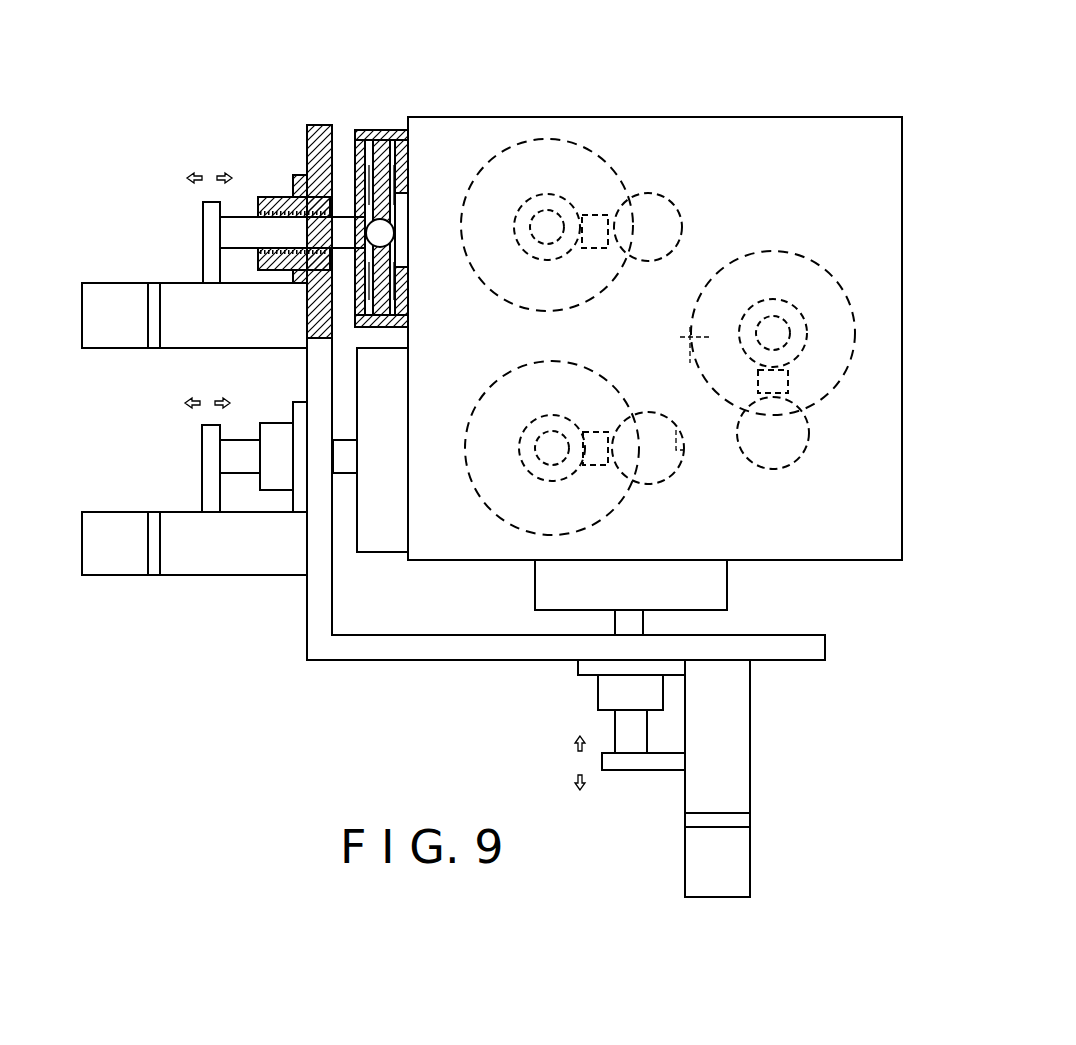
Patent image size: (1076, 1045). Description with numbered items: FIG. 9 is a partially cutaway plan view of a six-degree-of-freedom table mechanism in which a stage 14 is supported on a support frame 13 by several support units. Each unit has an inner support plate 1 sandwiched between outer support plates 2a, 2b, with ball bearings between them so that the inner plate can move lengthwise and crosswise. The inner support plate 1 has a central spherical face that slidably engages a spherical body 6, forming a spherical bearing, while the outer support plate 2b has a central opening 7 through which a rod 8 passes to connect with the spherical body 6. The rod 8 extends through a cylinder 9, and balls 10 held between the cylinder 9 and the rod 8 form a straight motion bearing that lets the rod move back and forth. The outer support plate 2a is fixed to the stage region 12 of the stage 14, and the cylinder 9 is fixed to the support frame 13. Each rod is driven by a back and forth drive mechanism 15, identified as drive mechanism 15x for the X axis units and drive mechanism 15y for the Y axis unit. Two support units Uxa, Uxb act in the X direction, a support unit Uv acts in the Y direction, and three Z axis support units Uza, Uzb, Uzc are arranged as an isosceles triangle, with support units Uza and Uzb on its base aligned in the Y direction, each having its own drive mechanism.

The inner support plate 1 is at (371, 128).
The outer support plate 2a is at (402, 128).
The outer support plate 2b is at (347, 150).
The spherical body 6 is at (386, 233).
The opening 7 is at (353, 262).
The rod 8 is at (240, 230).
The cylinder 9 is at (608, 688).
The balls 10 is at (45, 445).
The stage region 12 is at (407, 150).
The support frame 13 is at (345, 655).
The stage 14 is at (803, 125).
The back and forth drive mechanism 15 is at (669, 216).
The back and forth drive mechanism for X axis 15x is at (175, 300).
The back and forth drive mechanism for Y axis 15y is at (735, 768).
The support unit for X axis Uxa is at (347, 202).
The support unit for X axis Uxb is at (345, 530).
The support unit for Z axis Uza is at (594, 155).
The support unit for Z axis Uzb is at (511, 513).
The support unit for Z axis Uzc is at (848, 312).
The support unit Uv is at (660, 623).